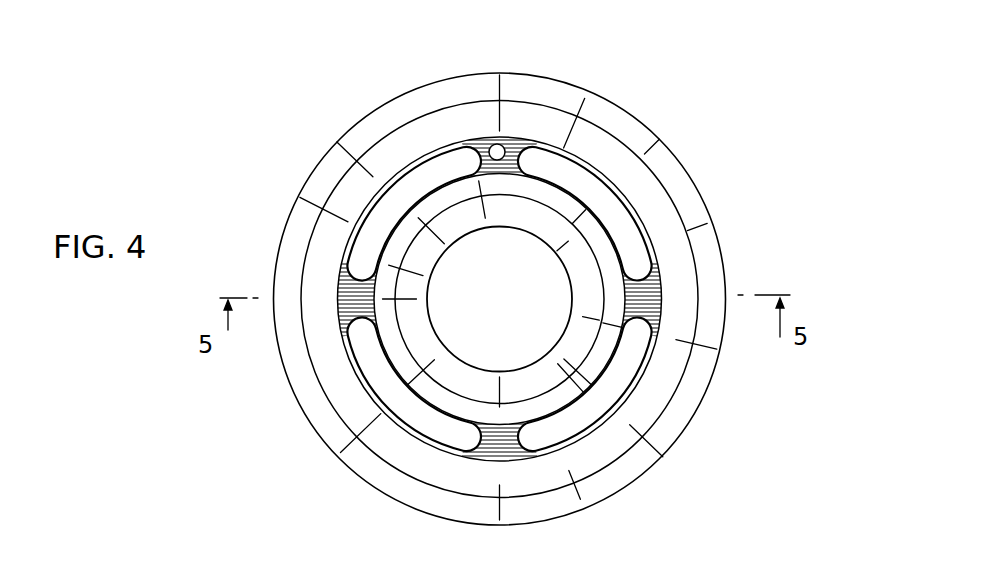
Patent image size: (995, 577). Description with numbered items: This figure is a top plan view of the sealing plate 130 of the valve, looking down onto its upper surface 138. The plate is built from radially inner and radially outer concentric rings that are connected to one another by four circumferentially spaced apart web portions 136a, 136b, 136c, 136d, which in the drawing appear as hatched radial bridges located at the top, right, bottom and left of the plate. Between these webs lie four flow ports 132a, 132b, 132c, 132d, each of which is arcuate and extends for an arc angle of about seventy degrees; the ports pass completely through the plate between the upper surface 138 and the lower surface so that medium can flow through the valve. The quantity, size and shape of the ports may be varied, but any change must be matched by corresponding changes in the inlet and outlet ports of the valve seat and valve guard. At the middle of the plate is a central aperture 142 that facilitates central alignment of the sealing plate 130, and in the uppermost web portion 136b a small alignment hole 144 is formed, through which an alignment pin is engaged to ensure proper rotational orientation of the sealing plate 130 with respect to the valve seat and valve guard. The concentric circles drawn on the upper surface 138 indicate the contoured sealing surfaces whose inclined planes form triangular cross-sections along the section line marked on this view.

The sealing plate 130 is at (768, 122).
The flow port 132a is at (600, 183).
The flow port 132b is at (603, 407).
The flow port 132c is at (383, 392).
The flow port 132d is at (390, 188).
The web portion 136a is at (660, 283).
The web portion 136b is at (524, 140).
The web portion 136c is at (340, 272).
The web portion 136d is at (497, 448).
The upper surface 138 is at (787, 576).
The central aperture 142 is at (499, 299).
The alignment hole 144 is at (500, 144).